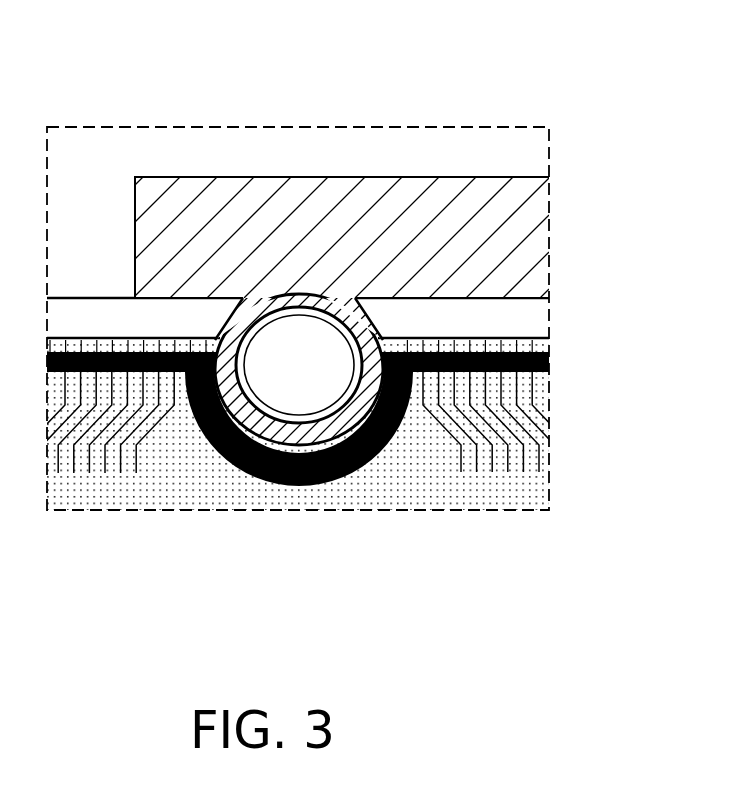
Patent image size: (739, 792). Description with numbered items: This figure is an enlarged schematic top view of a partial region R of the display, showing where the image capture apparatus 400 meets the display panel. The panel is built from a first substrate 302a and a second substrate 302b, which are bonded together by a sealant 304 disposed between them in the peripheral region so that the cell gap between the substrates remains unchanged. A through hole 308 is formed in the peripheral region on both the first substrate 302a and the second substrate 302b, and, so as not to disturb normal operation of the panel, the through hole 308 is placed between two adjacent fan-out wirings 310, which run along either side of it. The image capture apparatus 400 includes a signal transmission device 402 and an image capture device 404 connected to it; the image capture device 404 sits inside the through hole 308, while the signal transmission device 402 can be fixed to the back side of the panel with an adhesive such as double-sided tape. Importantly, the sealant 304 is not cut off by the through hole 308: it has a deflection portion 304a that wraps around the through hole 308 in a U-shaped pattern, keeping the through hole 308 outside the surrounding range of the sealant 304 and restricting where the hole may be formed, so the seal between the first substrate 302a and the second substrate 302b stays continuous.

The image capture apparatus 400 is at (258, 58).
The signal transmission device 402 is at (188, 213).
The image capture device 404 is at (280, 342).
The through hole 308 is at (358, 309).
The first substrate 302a is at (530, 300).
The second substrate 302b is at (525, 338).
The sealant 304 is at (550, 360).
The deflection portion 304a is at (305, 482).
The fan-out wirings 310 is at (137, 458).
The partial region R is at (522, 125).